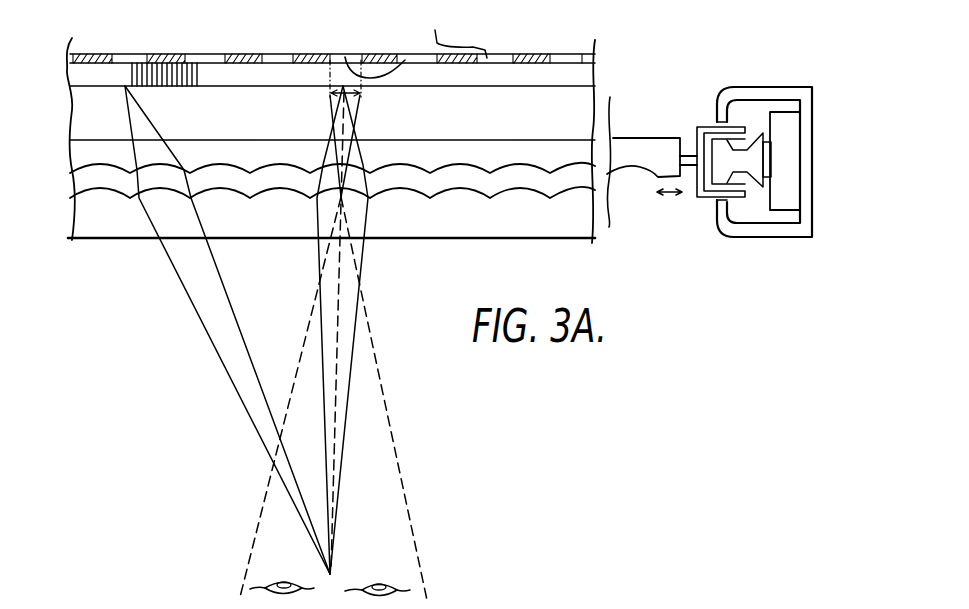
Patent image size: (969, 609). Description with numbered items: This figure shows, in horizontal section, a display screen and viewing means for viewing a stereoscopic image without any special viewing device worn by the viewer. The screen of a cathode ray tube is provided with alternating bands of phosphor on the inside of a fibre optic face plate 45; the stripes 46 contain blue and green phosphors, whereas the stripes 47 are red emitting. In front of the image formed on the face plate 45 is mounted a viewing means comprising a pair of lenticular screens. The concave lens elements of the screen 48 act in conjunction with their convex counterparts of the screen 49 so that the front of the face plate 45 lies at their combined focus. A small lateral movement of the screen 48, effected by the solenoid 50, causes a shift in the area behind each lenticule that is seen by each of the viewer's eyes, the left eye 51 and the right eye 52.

The fibre optic face plate 45 is at (580, 74).
The stripes 46 is at (382, 120).
The stripes 47 is at (255, 54).
The screen 48 is at (222, 155).
The screen 49 is at (103, 217).
The solenoid 50 is at (743, 97).
The left eye 51 is at (280, 580).
The right eye 52 is at (380, 583).